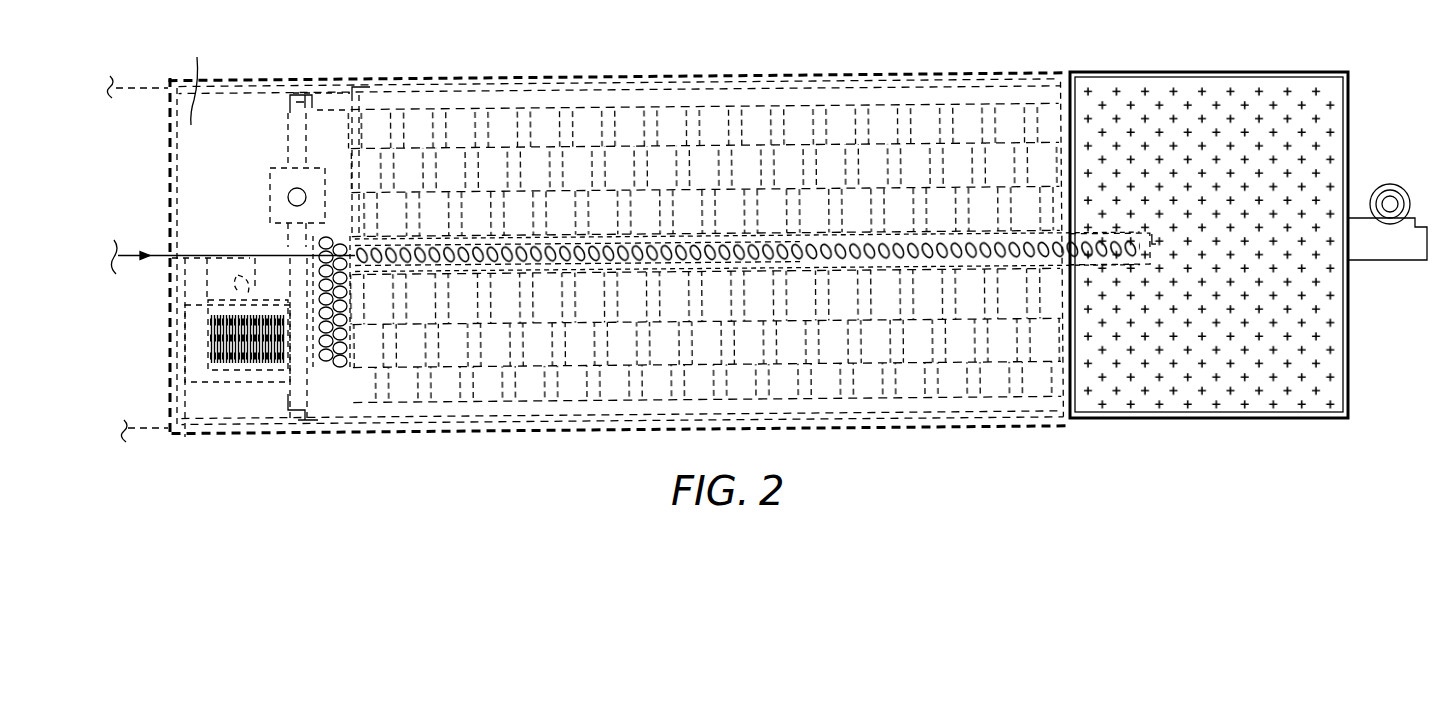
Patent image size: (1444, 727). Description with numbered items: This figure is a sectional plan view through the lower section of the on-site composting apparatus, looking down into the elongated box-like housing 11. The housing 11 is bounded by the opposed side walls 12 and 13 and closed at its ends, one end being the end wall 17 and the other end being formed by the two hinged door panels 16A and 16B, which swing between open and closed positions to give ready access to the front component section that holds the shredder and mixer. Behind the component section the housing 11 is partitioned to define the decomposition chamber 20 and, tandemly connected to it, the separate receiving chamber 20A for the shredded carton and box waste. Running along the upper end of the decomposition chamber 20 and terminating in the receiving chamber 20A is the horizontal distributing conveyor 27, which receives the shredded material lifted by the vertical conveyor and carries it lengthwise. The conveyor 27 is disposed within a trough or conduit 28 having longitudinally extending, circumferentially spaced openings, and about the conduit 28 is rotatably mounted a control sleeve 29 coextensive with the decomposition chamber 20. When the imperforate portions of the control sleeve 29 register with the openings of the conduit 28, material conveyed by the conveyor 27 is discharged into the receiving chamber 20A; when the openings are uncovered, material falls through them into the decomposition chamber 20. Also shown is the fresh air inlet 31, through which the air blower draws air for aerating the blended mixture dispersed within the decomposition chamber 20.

The housing 11 is at (926, 15).
The side wall 12 is at (764, 80).
The side wall 13 is at (592, 432).
The door panel 16A is at (172, 372).
The door panel 16B is at (170, 205).
The end wall 17 is at (1350, 356).
The decomposition chamber 20 is at (977, 176).
The receiving chamber 20A is at (1232, 171).
The horizontal distributing conveyor 27 is at (755, 231).
The trough or conduit 28 is at (421, 236).
The control sleeve 29 is at (474, 236).
The fresh air inlet 31 is at (294, 186).